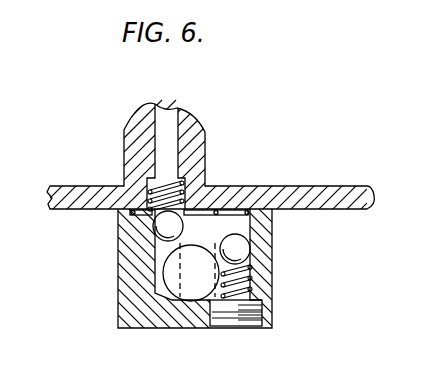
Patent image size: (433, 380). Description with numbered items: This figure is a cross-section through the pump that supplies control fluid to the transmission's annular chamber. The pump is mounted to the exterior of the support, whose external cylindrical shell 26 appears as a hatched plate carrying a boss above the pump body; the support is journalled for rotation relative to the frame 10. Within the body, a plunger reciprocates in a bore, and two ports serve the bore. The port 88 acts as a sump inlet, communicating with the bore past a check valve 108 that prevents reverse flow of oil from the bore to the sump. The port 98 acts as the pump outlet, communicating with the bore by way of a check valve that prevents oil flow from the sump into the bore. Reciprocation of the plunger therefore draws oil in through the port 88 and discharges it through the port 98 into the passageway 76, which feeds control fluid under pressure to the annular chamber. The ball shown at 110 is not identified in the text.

The frame 10 is at (193, 290).
The external cylindrical shell 26 is at (292, 192).
The passageway 76 is at (163, 122).
The port 88 is at (238, 223).
The port 98 is at (160, 255).
The check valve 108 is at (247, 251).
The ball 110 is at (165, 228).